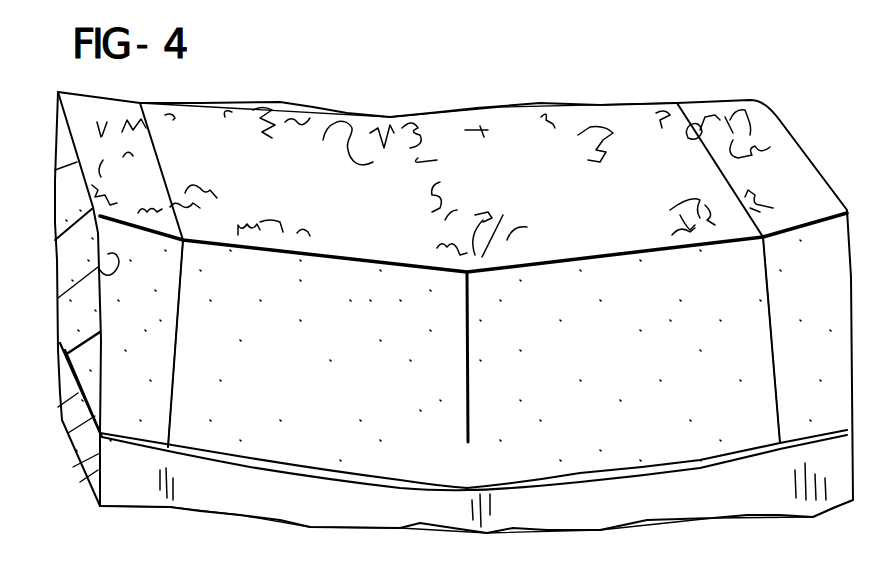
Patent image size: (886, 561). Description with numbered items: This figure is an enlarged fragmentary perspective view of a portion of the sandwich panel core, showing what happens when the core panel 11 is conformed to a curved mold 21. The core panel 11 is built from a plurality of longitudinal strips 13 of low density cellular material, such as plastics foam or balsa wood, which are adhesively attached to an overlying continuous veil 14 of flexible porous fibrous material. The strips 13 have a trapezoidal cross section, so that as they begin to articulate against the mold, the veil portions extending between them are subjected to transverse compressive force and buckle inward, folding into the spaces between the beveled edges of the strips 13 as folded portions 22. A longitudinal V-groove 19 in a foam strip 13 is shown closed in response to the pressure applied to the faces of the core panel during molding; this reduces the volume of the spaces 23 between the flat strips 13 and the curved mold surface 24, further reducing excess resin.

The core panel 11 is at (538, 96).
The longitudinal strips 13 is at (800, 410).
The veil 14 is at (362, 126).
The longitudinal groove 19 is at (468, 368).
The curved mold 21 is at (125, 492).
The folded portions 22 is at (172, 247).
The spaces 23 is at (274, 467).
The curved mold surface 24 is at (637, 478).